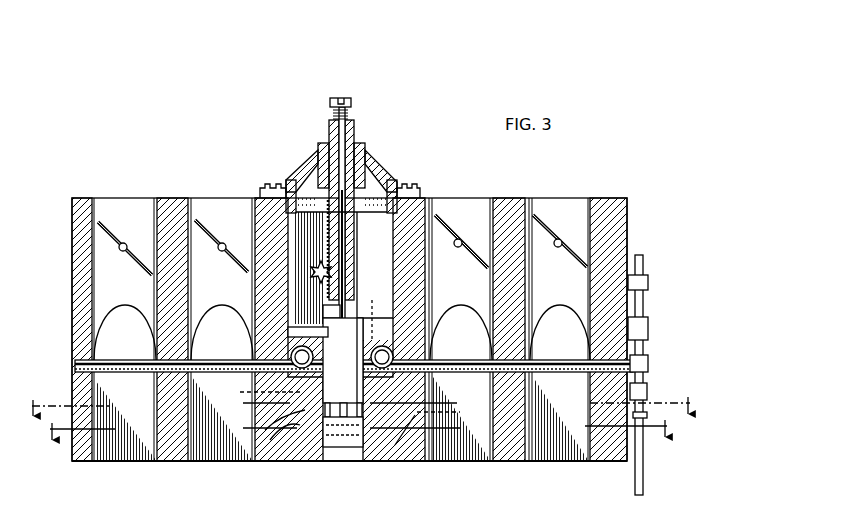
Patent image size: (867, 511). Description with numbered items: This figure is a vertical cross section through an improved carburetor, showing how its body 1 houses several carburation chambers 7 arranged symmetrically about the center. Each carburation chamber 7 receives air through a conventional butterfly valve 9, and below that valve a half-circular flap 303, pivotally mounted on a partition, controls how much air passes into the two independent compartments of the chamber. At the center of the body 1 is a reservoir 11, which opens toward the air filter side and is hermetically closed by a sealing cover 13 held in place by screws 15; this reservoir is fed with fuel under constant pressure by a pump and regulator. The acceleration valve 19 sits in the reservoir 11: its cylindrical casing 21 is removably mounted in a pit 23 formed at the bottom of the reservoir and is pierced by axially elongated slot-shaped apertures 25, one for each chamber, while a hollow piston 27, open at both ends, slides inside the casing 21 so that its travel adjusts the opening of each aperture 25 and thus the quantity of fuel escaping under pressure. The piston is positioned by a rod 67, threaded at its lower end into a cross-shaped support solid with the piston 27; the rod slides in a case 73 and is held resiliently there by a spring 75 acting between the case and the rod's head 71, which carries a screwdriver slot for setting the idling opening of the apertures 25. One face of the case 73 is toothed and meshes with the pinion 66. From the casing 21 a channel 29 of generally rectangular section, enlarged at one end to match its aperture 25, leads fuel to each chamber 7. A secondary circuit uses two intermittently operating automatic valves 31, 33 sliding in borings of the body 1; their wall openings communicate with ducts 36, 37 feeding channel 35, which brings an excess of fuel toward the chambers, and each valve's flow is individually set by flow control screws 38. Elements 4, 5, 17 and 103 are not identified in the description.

The body 1 is at (636, 216).
The section line 4- 4 is at (361, 399).
The section line 5- 5 is at (356, 446).
The carburation chamber 7 is at (207, 207).
The butterfly valve 9 is at (112, 221).
The reservoir 11 is at (431, 214).
The sealing cover 13 is at (378, 173).
The screws 15 is at (417, 182).
The chamber 17 is at (387, 313).
The acceleration valve 19 is at (343, 354).
The cylindrical casing 21 is at (371, 312).
The pit 23 is at (380, 440).
The apertures 25 is at (343, 405).
The hollow piston 27 is at (360, 298).
The channel 29 is at (302, 382).
The automatic valve 31 is at (291, 357).
The automatic valve 33 is at (393, 363).
The channel 35 is at (397, 445).
The duct 36 is at (285, 448).
The duct 37 is at (363, 415).
The flow control screws 38 is at (335, 394).
The pinion 66 is at (320, 260).
The rod 67 is at (354, 148).
The head 71 is at (332, 100).
The case 73 is at (354, 123).
The spring 75 is at (350, 108).
The actuating rod 103 is at (117, 372).
The half-circular flap 303 is at (137, 296).